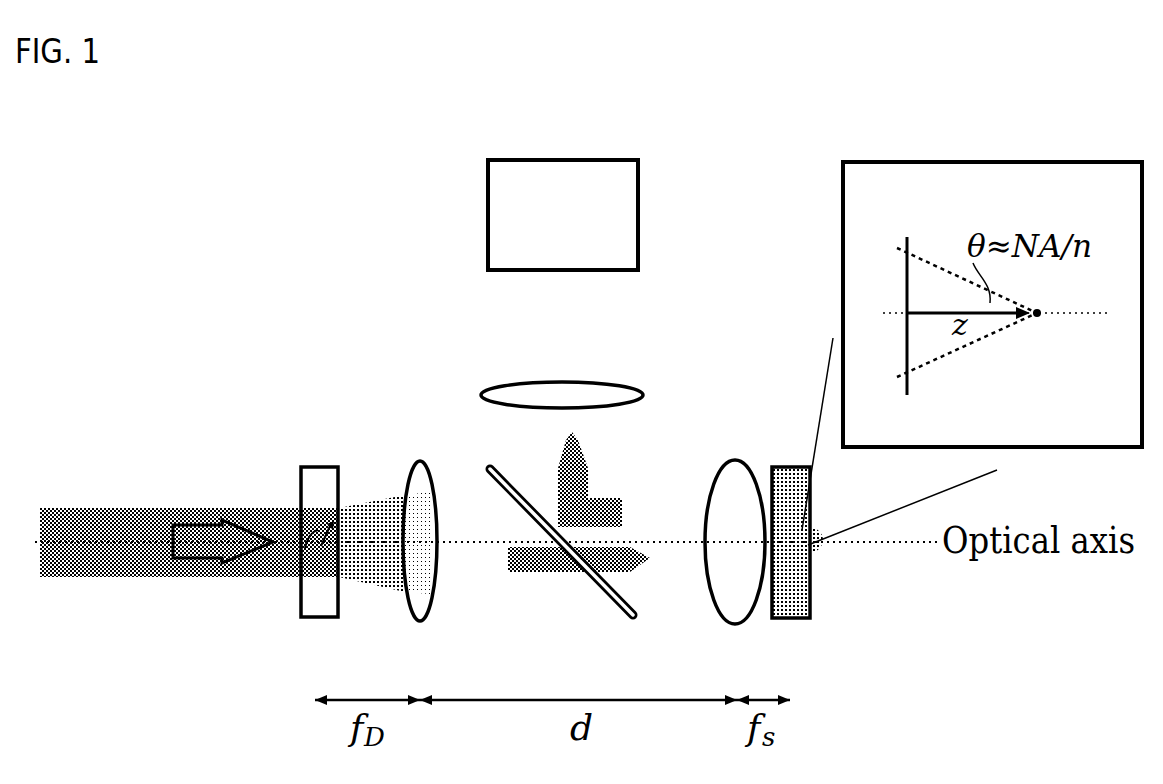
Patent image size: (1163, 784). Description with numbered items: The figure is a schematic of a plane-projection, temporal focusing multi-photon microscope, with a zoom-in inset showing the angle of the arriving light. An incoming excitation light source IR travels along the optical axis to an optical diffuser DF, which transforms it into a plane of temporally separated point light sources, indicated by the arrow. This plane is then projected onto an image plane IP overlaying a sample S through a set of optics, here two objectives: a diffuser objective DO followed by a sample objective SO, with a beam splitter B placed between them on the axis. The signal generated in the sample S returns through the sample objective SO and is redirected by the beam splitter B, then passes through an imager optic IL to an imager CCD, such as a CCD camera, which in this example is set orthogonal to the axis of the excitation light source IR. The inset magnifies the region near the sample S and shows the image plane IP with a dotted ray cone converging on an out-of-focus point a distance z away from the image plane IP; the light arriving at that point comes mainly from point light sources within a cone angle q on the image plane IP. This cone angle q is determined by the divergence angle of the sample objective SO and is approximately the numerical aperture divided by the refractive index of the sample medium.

The excitation light source IR is at (189, 542).
The optical diffuser DF is at (317, 574).
The diffuser objective DO is at (420, 571).
The beam splitter B is at (561, 575).
The imager optic IL is at (592, 399).
The imager CCD is at (563, 215).
The sample objective SO is at (735, 570).
The sample S is at (797, 574).
The image plane IP is at (906, 297).
The cone angle q is at (1046, 333).